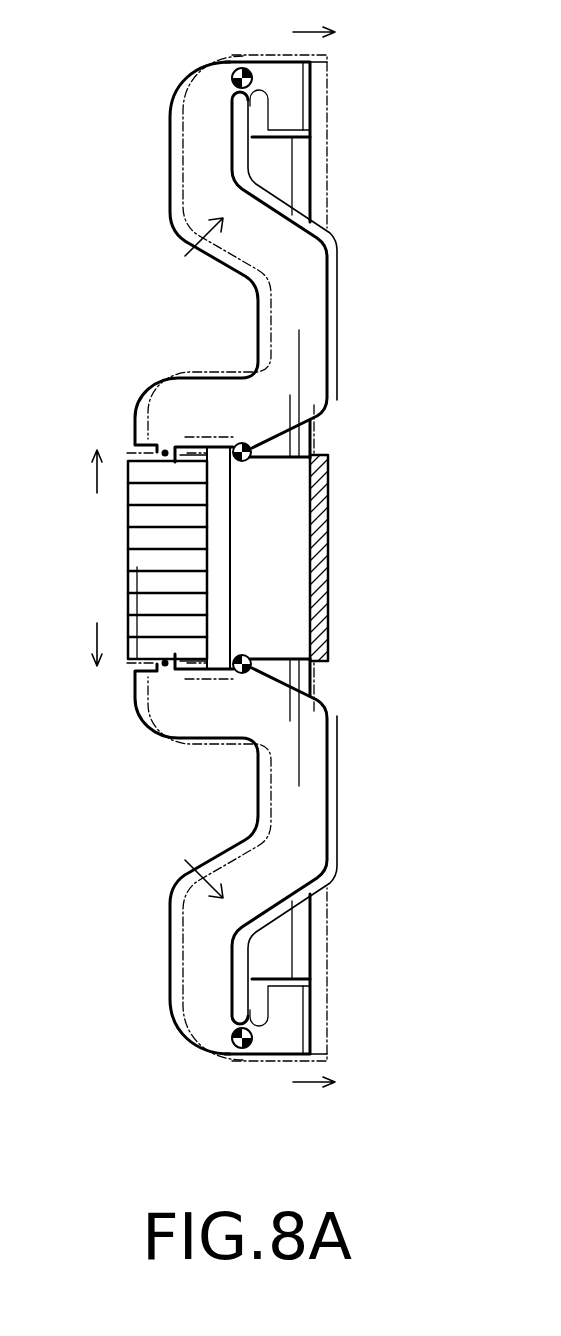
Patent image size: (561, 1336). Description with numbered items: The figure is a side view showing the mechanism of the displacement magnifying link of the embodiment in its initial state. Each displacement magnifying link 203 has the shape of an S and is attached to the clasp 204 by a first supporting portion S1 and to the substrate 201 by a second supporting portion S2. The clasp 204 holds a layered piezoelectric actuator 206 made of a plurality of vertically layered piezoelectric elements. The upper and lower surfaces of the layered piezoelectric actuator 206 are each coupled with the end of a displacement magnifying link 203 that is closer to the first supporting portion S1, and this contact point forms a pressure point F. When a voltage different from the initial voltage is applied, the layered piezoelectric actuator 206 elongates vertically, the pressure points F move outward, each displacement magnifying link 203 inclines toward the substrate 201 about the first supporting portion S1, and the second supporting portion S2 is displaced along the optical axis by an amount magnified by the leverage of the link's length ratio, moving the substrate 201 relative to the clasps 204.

The substrate 201 is at (297, 958).
The displacement magnifying link 203 is at (317, 266).
The clasp 204 is at (327, 558).
The layered piezoelectric actuator 206 is at (140, 538).
The first supporting portion S1 is at (243, 463).
The second supporting portion S2 is at (232, 66).
The pressure point F is at (165, 452).